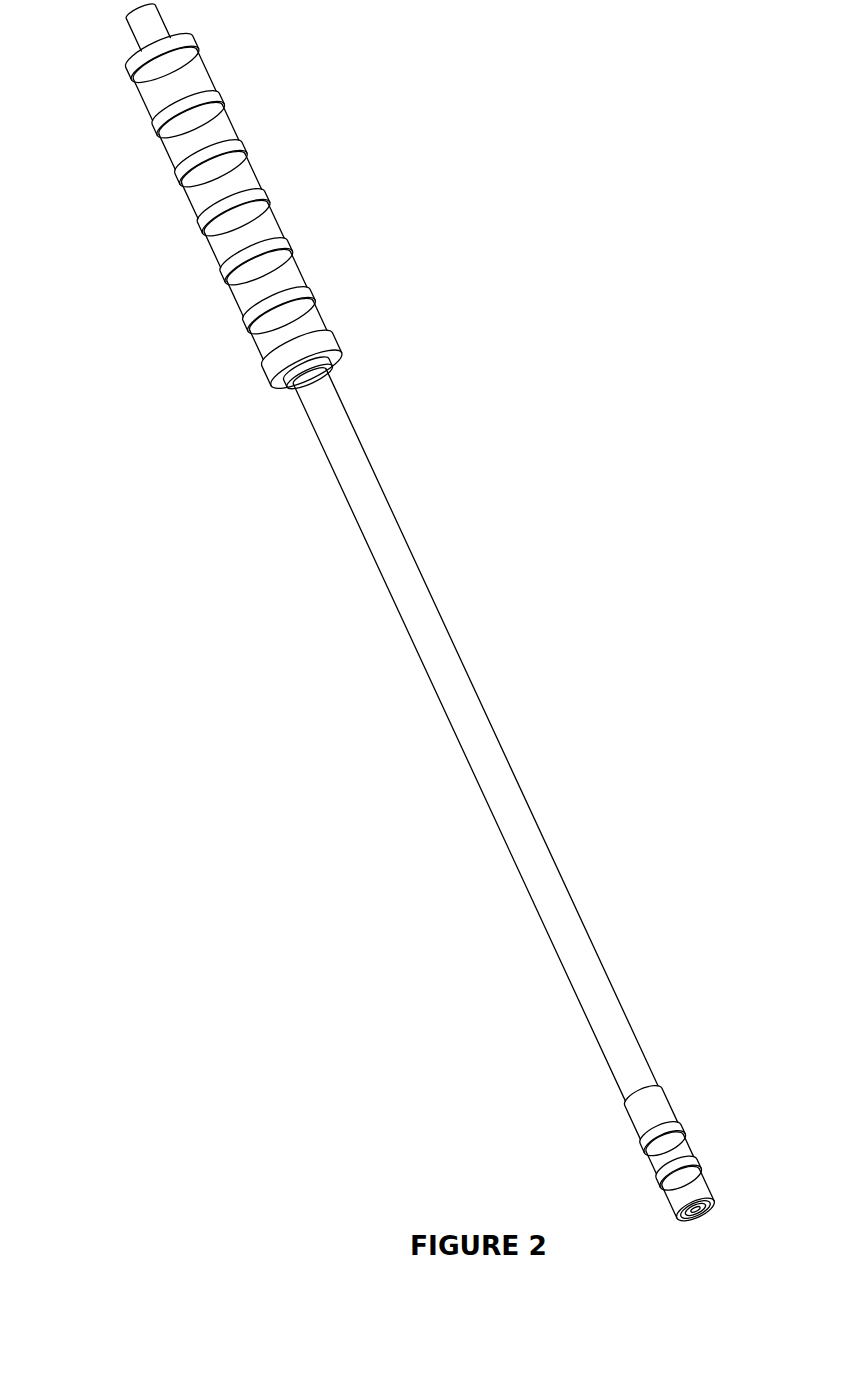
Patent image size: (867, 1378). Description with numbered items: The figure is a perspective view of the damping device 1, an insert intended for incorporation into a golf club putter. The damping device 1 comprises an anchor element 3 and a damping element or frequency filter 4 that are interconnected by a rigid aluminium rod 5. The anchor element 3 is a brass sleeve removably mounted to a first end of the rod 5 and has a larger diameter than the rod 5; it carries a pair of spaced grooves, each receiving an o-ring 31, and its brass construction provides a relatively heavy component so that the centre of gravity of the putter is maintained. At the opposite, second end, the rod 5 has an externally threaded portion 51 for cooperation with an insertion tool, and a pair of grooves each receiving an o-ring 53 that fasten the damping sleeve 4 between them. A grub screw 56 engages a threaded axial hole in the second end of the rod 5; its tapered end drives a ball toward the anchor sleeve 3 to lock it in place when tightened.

The damping device 1 is at (427, 617).
The anchor element 3 is at (660, 1150).
The damping element 4 is at (221, 228).
The rigid aluminium rod 5 is at (415, 754).
The o-ring 31 is at (688, 1157).
The externally threaded portion 51 is at (147, 31).
The o-ring 53 is at (175, 44).
The grub screw 56 is at (700, 1211).